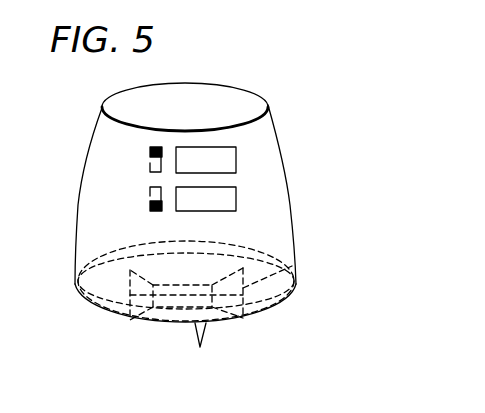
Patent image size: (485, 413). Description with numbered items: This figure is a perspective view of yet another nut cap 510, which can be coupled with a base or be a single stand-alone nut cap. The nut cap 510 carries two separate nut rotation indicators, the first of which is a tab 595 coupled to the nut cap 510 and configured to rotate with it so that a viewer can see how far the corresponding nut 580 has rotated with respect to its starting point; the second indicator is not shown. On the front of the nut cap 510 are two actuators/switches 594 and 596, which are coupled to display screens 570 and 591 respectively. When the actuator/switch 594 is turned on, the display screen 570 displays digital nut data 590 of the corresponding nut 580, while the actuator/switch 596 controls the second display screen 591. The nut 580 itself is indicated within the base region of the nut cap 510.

The nut cap 510 is at (256, 66).
The display screen 570 is at (236, 152).
The nut 580 is at (138, 284).
The digital nut data 590 is at (213, 163).
The display screen 591 is at (237, 198).
The actuator/switch 594 is at (148, 163).
The tab 595 is at (203, 333).
The actuator/switch 596 is at (148, 198).